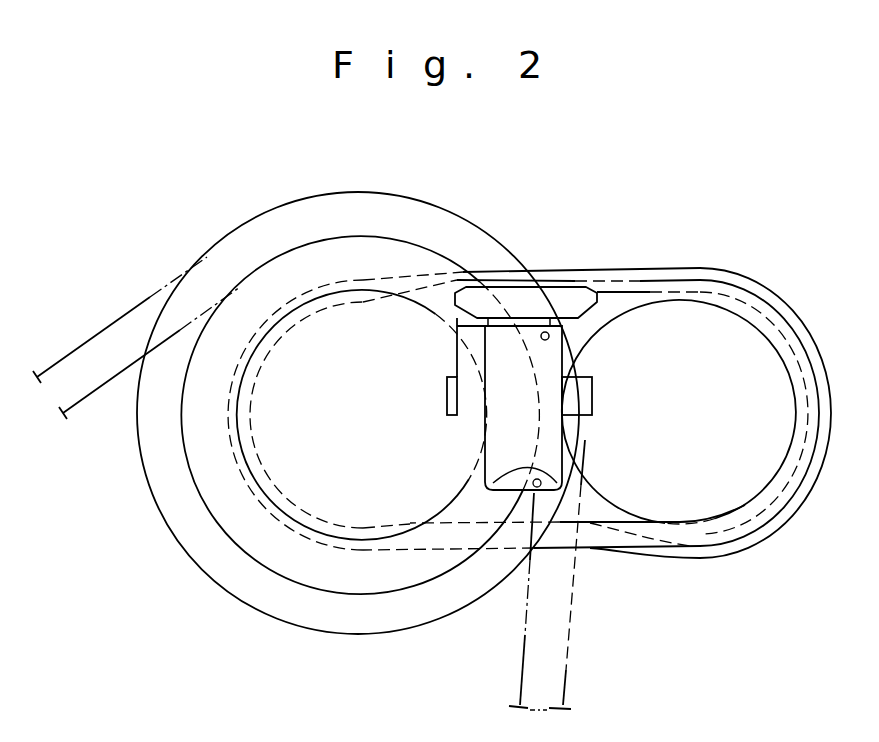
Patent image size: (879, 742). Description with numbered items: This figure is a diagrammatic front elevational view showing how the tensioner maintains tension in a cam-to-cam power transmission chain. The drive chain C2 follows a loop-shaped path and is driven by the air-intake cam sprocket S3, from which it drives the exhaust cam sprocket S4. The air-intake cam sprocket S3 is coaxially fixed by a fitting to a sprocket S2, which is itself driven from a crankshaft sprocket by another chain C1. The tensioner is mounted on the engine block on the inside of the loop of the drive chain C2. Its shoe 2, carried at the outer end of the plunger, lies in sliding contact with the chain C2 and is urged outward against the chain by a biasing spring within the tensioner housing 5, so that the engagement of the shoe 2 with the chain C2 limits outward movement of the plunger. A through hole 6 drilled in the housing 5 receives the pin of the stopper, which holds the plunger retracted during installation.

The shoe 2 is at (560, 292).
The tensioner housing 5 is at (500, 440).
The through hole 6 is at (549, 338).
The first cord C1 is at (77, 356).
The drive chain C2 is at (607, 271).
The sprocket S2 is at (180, 513).
The air-intake cam sprocket S3 is at (360, 327).
The exhaust cam sprocket S4 is at (747, 347).